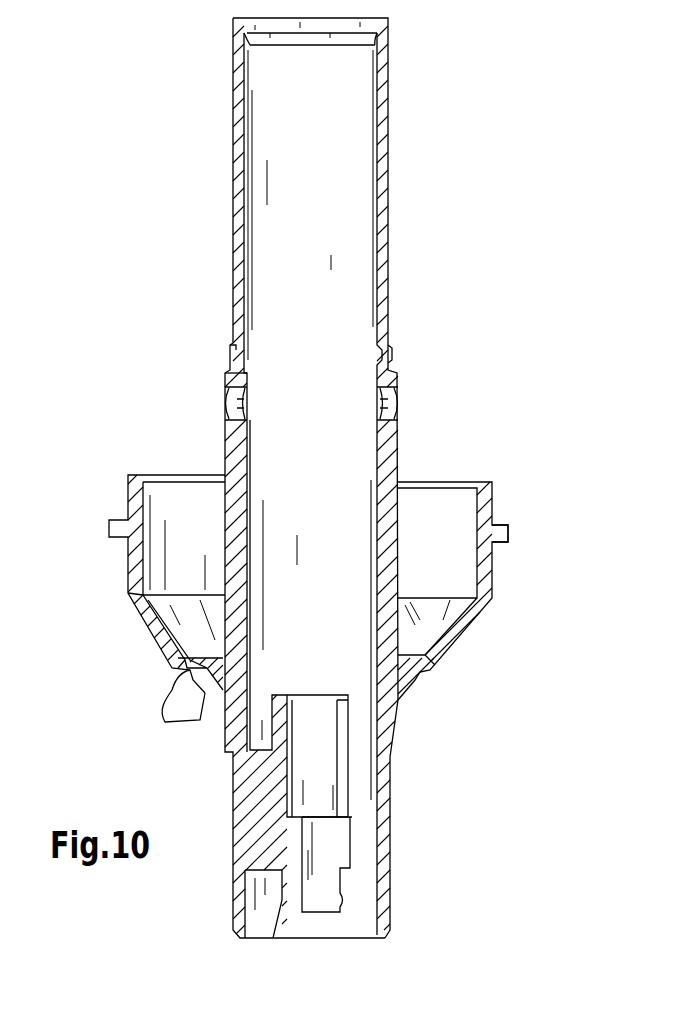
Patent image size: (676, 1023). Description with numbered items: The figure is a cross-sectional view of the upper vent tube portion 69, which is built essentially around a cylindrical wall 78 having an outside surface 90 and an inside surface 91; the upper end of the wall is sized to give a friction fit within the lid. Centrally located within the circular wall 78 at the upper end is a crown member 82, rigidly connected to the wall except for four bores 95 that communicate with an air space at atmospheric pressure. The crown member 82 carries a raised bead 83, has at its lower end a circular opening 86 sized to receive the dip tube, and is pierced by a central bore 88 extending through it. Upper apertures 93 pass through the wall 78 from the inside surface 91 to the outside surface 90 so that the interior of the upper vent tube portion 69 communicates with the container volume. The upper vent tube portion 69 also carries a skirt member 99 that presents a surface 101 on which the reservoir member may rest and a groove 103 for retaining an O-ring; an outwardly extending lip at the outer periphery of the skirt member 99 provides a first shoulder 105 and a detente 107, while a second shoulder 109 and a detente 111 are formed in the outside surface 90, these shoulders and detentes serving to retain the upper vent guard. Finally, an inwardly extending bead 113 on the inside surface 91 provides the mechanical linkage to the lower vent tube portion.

The upper vent tube portion 69 is at (500, 331).
The cylindrical wall 78 is at (392, 332).
The crown member 82 is at (297, 913).
The raised bead 83 is at (280, 893).
The circular opening 86 is at (303, 693).
The central bore 88 is at (308, 837).
The outside surface 90 is at (389, 203).
The inside surface 91 is at (378, 172).
The upper apertures 93 is at (228, 404).
The bores 95 is at (372, 800).
The skirt member 99 is at (130, 597).
The surface 101 is at (172, 662).
The groove 103 is at (190, 690).
The first shoulder 105 is at (507, 530).
The detente 107 is at (484, 513).
The second shoulder 109 is at (230, 370).
The detente 111 is at (236, 345).
The inwardly extending bead 113 is at (253, 18).